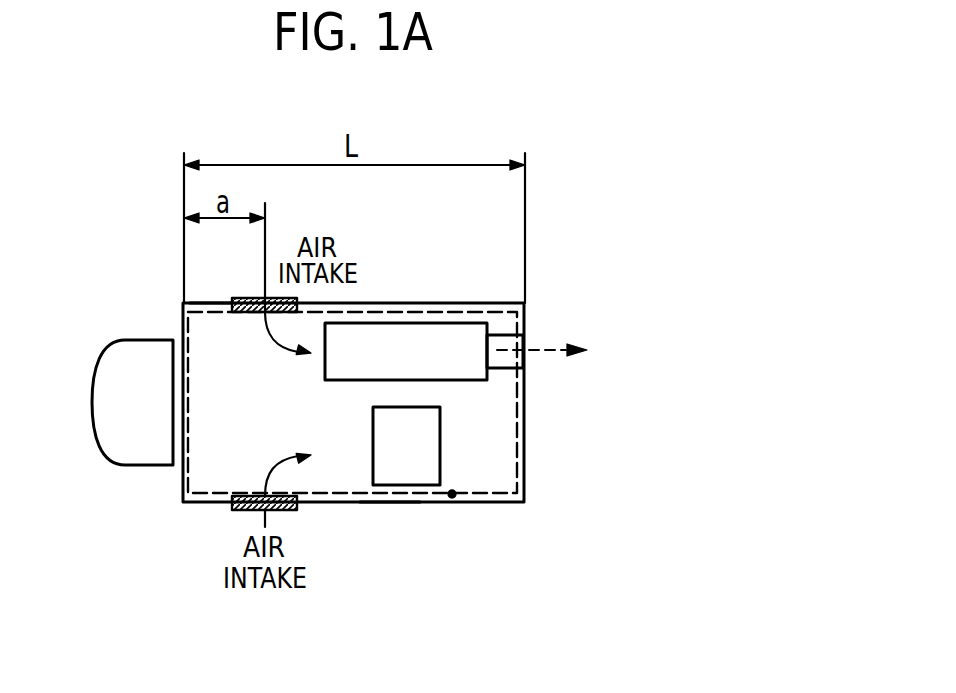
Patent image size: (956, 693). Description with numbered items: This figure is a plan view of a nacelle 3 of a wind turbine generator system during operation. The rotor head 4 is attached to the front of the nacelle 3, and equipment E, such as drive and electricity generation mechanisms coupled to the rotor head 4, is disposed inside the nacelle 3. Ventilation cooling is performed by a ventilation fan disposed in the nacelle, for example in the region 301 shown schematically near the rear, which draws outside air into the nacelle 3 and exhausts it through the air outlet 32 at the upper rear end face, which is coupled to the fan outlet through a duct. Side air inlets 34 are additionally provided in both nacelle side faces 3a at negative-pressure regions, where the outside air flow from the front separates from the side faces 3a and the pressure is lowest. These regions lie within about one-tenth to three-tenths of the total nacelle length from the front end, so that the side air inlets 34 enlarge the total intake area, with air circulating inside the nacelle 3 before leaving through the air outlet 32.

The nacelle 3 is at (487, 503).
The nacelle side face 3a is at (213, 300).
The side air inlet 34 is at (240, 312).
The air outlet 32 is at (523, 347).
The rotor head 4 is at (92, 403).
The region 301 is at (452, 494).
The equipment E is at (428, 320).